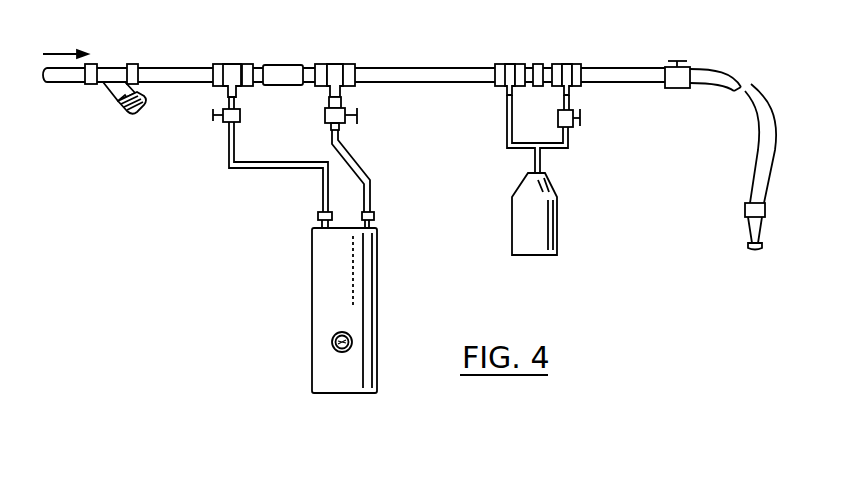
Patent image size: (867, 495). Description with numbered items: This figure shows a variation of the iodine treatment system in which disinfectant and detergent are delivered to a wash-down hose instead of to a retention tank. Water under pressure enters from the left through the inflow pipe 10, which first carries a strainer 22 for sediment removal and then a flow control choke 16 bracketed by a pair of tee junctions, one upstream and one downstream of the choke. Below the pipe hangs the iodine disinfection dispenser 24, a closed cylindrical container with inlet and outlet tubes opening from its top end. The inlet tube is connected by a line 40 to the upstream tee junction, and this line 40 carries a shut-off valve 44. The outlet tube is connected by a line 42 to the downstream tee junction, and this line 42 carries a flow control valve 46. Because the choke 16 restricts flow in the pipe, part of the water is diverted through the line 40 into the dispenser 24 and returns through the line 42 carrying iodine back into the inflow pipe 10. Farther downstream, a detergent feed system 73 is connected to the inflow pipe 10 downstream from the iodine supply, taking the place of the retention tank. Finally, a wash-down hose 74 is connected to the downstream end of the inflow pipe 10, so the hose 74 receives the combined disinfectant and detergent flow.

The inflow pipe 10 is at (163, 67).
The strainer 22 is at (112, 68).
The flow control choke 16 is at (281, 76).
The shut-off valve 44 is at (213, 116).
The flow control valve 46 is at (357, 115).
The line 40 is at (230, 160).
The line 42 is at (360, 173).
The iodine disinfection dispenser 24 is at (316, 288).
The detergent feed system 73 is at (556, 171).
The wash-down hose 74 is at (745, 218).